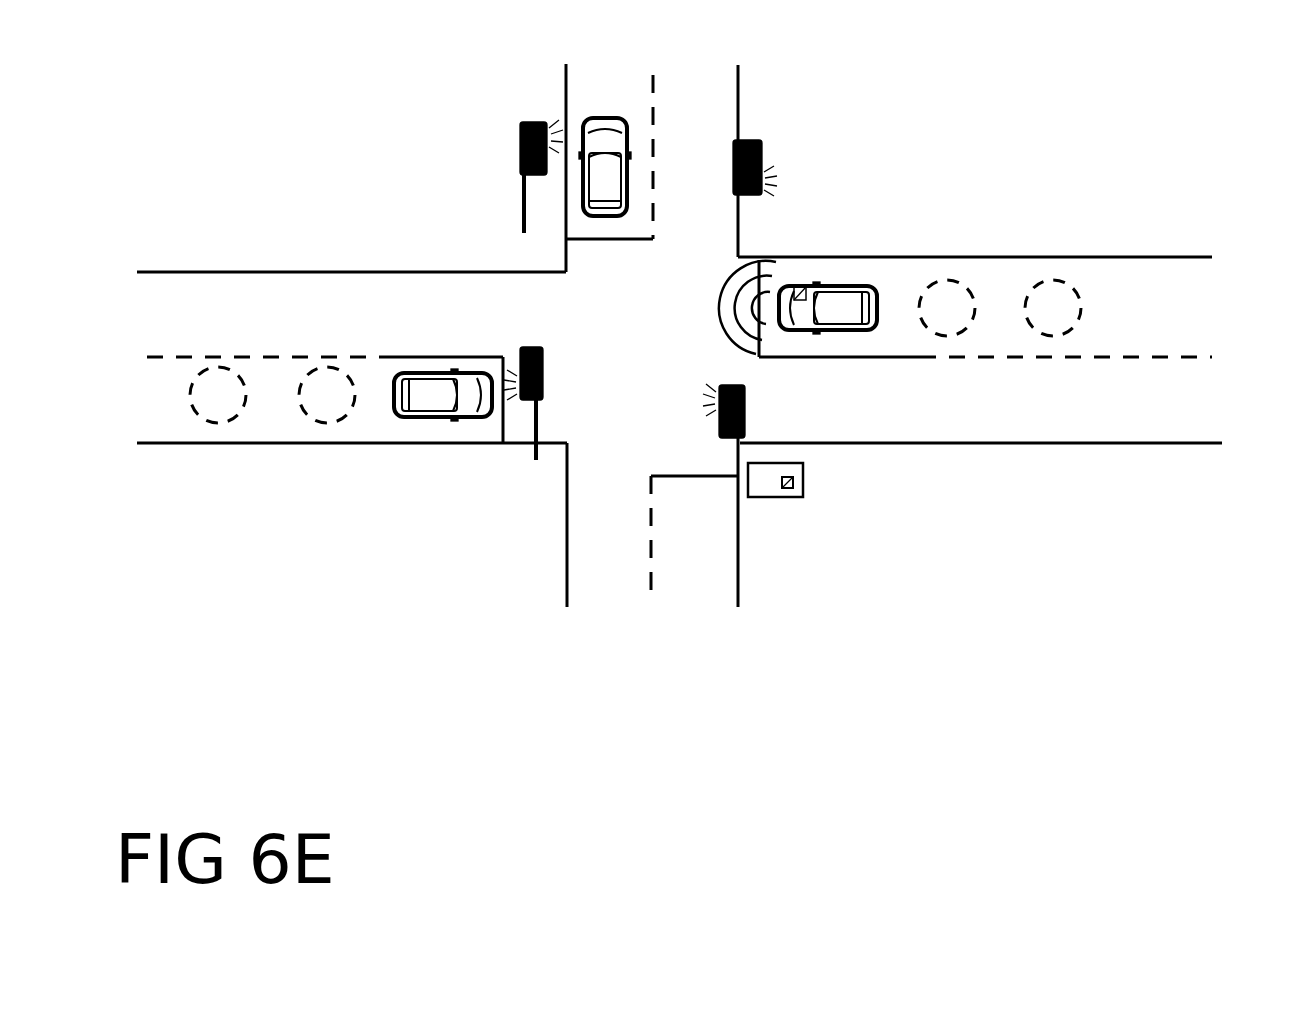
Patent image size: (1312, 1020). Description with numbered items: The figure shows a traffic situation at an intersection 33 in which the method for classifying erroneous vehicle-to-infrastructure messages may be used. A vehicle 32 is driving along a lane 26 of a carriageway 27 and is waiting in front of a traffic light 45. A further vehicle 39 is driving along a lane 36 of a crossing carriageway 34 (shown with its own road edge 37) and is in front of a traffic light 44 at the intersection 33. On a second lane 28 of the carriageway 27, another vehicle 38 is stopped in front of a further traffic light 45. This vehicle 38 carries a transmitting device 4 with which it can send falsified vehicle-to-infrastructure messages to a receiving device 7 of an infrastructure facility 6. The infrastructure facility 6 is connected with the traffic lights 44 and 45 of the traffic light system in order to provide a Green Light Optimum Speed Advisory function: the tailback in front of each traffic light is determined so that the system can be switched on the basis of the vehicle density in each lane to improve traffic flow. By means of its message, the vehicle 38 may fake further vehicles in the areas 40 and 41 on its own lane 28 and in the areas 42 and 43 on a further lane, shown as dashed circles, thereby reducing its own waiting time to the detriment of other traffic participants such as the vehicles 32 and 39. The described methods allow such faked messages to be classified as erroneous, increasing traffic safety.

The transmitting device 4 is at (800, 288).
The infrastructure facility 6 is at (758, 485).
The receiving device 7 is at (796, 483).
The lane 26 is at (1122, 423).
The carriageway 27 is at (1230, 400).
The second lane 28 is at (1178, 292).
The vehicle 32 is at (420, 396).
The intersection 33 is at (516, 490).
The carriageway 34 is at (686, 604).
The lane 36 is at (582, 548).
The road 37 is at (722, 90).
The vehicle 38 is at (860, 298).
The further vehicle 39 is at (591, 122).
The area 40 is at (946, 306).
The area 41 is at (1049, 298).
The area 42 is at (328, 408).
The area 43 is at (220, 408).
The traffic light 44 is at (520, 150).
The traffic light 45 is at (763, 157).